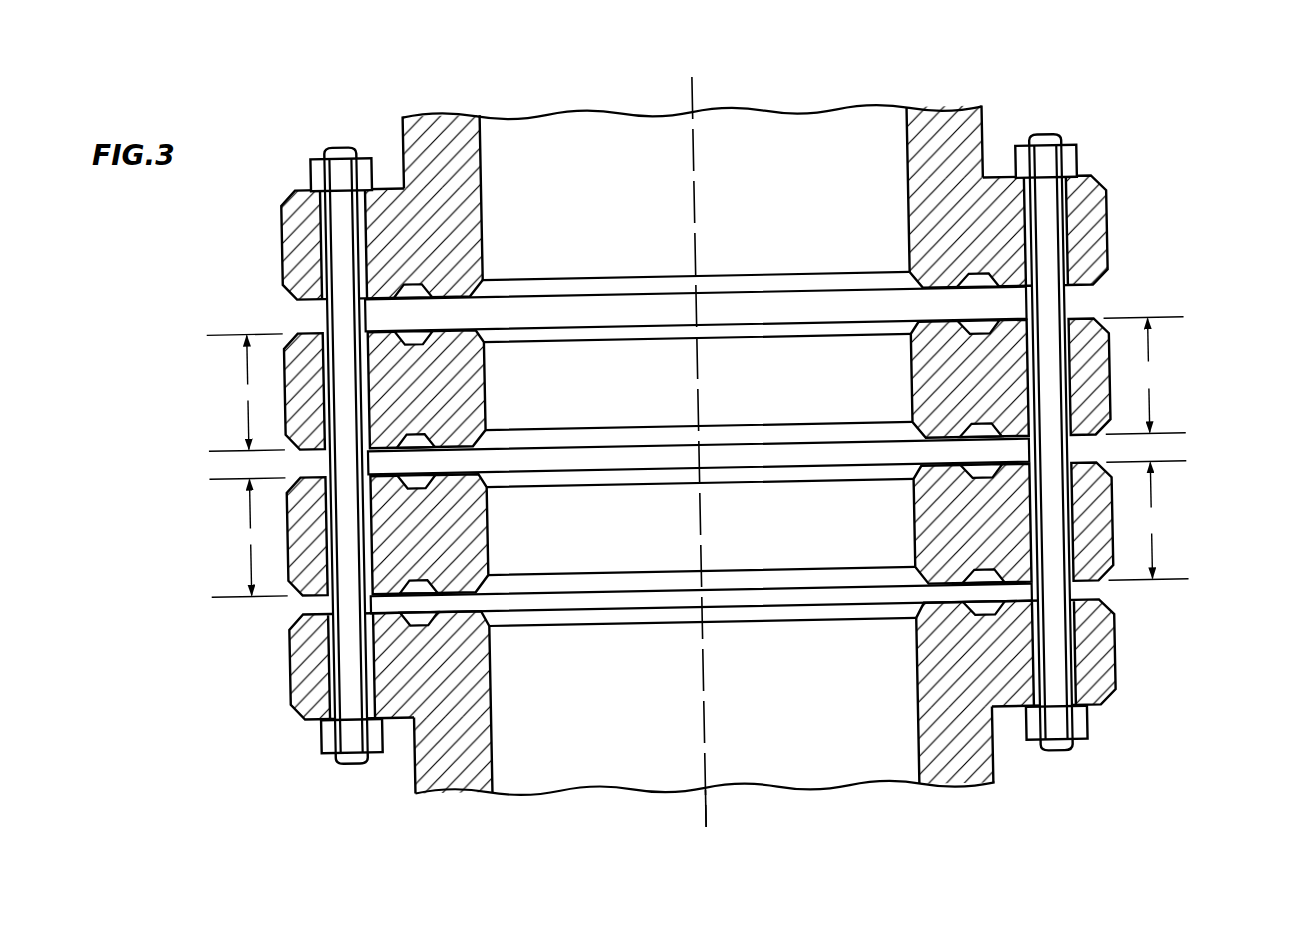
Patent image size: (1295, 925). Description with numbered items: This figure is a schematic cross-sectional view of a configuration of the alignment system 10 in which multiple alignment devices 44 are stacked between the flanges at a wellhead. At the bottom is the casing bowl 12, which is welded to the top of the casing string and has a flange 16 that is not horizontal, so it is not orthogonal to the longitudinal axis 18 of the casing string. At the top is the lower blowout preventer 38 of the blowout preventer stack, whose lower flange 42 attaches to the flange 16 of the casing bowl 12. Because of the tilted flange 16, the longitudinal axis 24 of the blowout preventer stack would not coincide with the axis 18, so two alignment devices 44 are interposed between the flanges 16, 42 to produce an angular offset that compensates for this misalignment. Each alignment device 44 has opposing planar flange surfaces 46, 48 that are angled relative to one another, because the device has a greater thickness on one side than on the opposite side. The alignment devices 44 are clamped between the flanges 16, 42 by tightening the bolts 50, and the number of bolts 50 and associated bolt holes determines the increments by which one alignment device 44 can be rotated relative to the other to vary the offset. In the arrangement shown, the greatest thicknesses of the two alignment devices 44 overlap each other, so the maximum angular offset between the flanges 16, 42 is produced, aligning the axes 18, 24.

The alignment system 10 is at (1177, 84).
The casing bowl 12 is at (407, 780).
The flange 16 is at (1113, 686).
The longitudinal axis 18 is at (698, 805).
The longitudinal axis 24 is at (700, 90).
The lower blowout preventer 38 is at (996, 126).
The lower flange 42 is at (1112, 238).
The alignment device 44 is at (1083, 317).
The planar flange surface 46 is at (457, 325).
The planar flange surface 48 is at (455, 446).
The bolt 50 is at (339, 138).